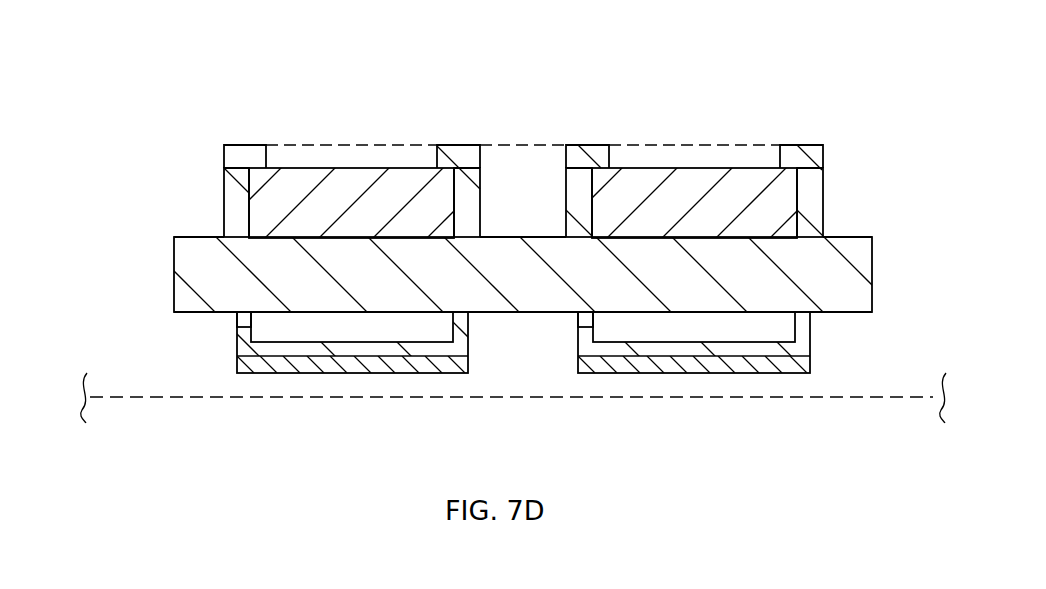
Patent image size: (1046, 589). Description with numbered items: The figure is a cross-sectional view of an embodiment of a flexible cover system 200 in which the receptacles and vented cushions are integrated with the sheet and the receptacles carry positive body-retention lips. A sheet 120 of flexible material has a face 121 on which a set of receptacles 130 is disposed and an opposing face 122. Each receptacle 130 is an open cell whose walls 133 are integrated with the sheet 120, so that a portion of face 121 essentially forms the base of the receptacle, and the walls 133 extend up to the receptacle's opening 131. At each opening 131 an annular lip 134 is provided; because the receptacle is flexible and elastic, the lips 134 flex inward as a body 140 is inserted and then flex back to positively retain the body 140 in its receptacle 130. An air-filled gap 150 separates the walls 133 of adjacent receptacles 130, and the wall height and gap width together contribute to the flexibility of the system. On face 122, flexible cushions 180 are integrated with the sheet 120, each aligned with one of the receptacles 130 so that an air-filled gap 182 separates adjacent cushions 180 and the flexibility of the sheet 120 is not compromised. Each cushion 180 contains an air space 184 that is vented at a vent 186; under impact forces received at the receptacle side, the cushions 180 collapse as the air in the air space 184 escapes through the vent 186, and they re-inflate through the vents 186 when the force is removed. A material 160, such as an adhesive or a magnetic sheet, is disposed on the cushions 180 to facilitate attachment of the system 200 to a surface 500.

The sheet 120 is at (837, 258).
The face 121 is at (835, 236).
The face 122 is at (830, 313).
The receptacle 130 is at (525, 128).
The opening 131 is at (287, 143).
The walls 133 is at (227, 183).
The annular lip 134 is at (257, 150).
The body 140 is at (383, 182).
The air-filled gap 150 is at (523, 178).
The material 160 is at (352, 365).
The flexible cushion 180 is at (544, 382).
The air-filled gap 182 is at (522, 352).
The air space 184 is at (457, 387).
The vent 186 is at (245, 320).
The flexible cover system 200 is at (96, 80).
The surface 500 is at (123, 398).